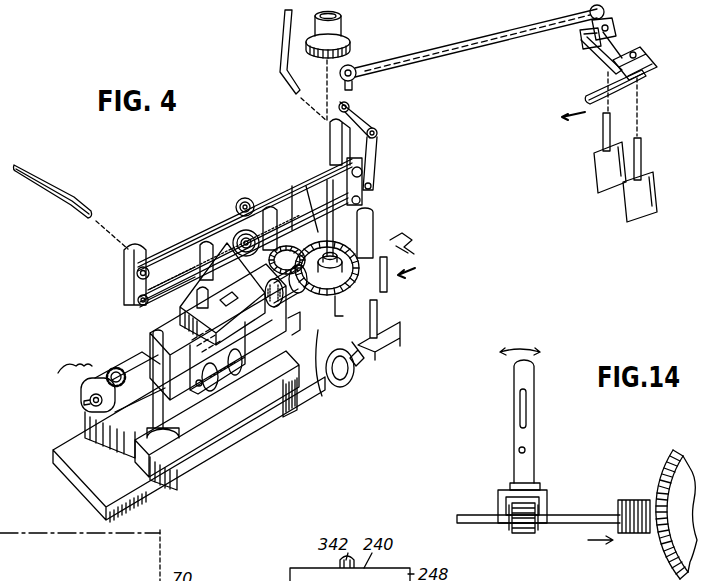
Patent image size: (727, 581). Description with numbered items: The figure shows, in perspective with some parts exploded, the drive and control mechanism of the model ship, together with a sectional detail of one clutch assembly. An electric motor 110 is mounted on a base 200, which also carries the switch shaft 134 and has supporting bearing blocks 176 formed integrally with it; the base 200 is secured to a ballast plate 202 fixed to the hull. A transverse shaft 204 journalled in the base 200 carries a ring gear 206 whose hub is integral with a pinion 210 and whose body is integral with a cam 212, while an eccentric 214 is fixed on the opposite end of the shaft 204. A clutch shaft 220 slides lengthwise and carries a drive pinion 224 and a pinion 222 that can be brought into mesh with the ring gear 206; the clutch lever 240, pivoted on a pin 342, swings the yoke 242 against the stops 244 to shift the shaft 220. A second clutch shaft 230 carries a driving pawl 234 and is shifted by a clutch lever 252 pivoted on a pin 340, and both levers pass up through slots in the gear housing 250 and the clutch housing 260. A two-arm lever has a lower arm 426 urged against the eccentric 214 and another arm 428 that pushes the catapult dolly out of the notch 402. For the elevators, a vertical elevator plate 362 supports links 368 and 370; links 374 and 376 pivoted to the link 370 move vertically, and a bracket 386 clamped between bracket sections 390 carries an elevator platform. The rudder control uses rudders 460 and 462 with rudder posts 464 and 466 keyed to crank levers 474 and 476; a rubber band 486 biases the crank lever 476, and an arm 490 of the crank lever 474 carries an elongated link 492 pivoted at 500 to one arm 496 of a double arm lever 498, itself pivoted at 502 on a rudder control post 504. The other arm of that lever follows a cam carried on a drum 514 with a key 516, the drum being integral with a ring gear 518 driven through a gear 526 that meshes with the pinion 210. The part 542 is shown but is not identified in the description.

In FIG. 4, the bracket 386 is at (66, 186).
In FIG. 4, the bracket section 390 is at (284, 43).
In FIG. 4, the knob 542 is at (350, 39).
In FIG. 4, the link 492 is at (457, 43).
In FIG. 4, the pivot 500 is at (358, 82).
In FIG. 4, the arm 490 is at (614, 24).
In FIG. 4, the crank lever 474 is at (618, 46).
In FIG. 4, the notch 402 is at (598, 51).
In FIG. 4, the crank lever 476 is at (645, 50).
In FIG. 4, the rubber band 486 is at (585, 98).
In FIG. 4, the rudder post 464 is at (602, 141).
In FIG. 4, the rudder 460 is at (599, 180).
In FIG. 4, the rudder post 466 is at (645, 156).
In FIG. 4, the rudder 462 is at (655, 191).
In FIG. 4, the arm 496 is at (362, 116).
In FIG. 4, the pivot 502 is at (385, 133).
In FIG. 4, the double arm lever 498 is at (387, 148).
In FIG. 4, the link 376 is at (363, 166).
In FIG. 4, the key 516 is at (360, 192).
In FIG. 4, the rudder control post 504 is at (374, 214).
In FIG. 4, the drum 514 is at (366, 247).
In FIG. 4, the driving pawl 234 is at (422, 235).
In FIG. 4, the clutch shaft 230 is at (410, 274).
In FIG. 4, the arm 428 is at (390, 292).
In FIG. 4, the ring gear 518 is at (339, 300).
In FIG. 4, the lower arm 426 is at (366, 362).
In FIG. 4, the eccentric 214 is at (352, 375).
In FIG. 4, the shaft 204 is at (322, 382).
In FIG. 4, the ring gear 206 is at (312, 248).
In FIG. 14, the ring gear 206 is at (670, 461).
In FIG. 4, the pin 340 is at (265, 284).
In FIG. 4, the pinion 210 is at (246, 270).
In FIG. 4, the gear housing 250 is at (297, 378).
In FIG. 4, the clutch housing 260 is at (293, 324).
In FIG. 4, the base 200 is at (262, 433).
In FIG. 4, the ballast plate 202 is at (130, 495).
In FIG. 4, the bearing block 176 is at (213, 437).
In FIG. 4, the electric motor 110 is at (118, 358).
In FIG. 4, the shaft 134 is at (150, 352).
In FIG. 4, the link 374 is at (126, 271).
In FIG. 4, the clutch lever 240 is at (190, 232).
In FIG. 14, the clutch lever 240 is at (534, 405).
In FIG. 4, the clutch lever 252 is at (165, 282).
In FIG. 4, the link 368 is at (232, 210).
In FIG. 4, the cam 212 is at (245, 196).
In FIG. 4, the vertical elevator plate 362 is at (258, 184).
In FIG. 4, the link 370 is at (293, 186).
In FIG. 4, the gear 526 is at (306, 186).
In FIG. 14, the pin 342 is at (526, 450).
In FIG. 14, the yoke 242 is at (498, 502).
In FIG. 14, the clutch shaft 220 is at (580, 515).
In FIG. 14, the stop 244 is at (512, 534).
In FIG. 14, the drive pinion 224 is at (530, 534).
In FIG. 14, the pinion 222 is at (635, 534).